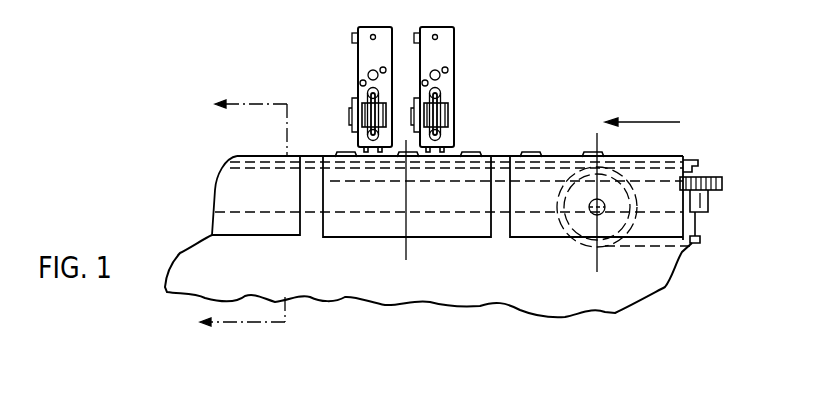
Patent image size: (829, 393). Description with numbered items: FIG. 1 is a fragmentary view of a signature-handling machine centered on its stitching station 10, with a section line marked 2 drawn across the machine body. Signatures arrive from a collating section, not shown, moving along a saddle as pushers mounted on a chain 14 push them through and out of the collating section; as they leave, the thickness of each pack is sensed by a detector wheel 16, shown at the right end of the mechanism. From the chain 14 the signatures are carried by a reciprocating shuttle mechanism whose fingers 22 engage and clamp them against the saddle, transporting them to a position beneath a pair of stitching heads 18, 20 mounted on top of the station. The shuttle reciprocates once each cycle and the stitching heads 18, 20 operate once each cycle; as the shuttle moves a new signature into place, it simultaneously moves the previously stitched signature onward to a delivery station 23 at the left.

The stitching station 10 is at (462, 118).
The chain 14 is at (700, 242).
The detector wheel 16 is at (722, 183).
The stitching head 18 is at (365, 52).
The stitching head 20 is at (450, 46).
The fingers 22 is at (538, 155).
The delivery station 23 is at (150, 197).
The section line 2- 2 is at (229, 214).